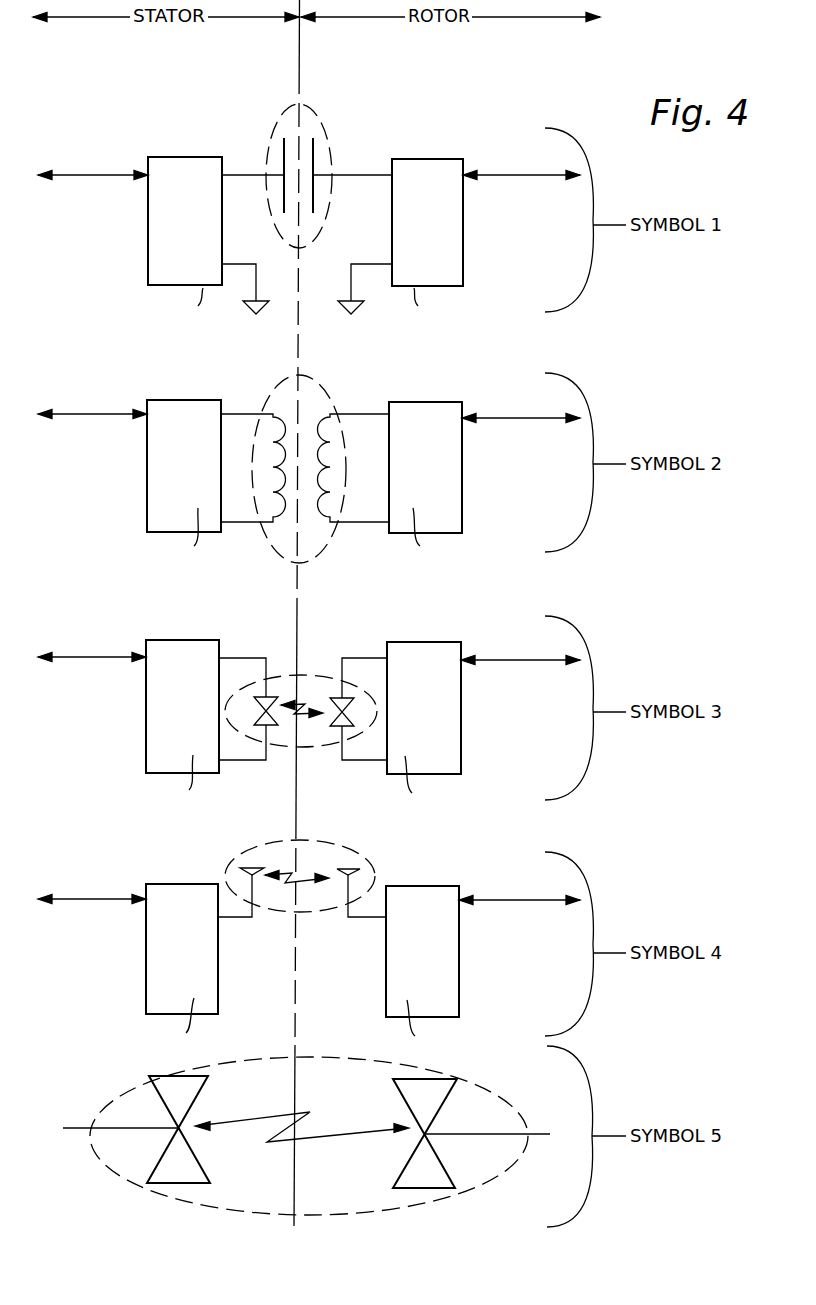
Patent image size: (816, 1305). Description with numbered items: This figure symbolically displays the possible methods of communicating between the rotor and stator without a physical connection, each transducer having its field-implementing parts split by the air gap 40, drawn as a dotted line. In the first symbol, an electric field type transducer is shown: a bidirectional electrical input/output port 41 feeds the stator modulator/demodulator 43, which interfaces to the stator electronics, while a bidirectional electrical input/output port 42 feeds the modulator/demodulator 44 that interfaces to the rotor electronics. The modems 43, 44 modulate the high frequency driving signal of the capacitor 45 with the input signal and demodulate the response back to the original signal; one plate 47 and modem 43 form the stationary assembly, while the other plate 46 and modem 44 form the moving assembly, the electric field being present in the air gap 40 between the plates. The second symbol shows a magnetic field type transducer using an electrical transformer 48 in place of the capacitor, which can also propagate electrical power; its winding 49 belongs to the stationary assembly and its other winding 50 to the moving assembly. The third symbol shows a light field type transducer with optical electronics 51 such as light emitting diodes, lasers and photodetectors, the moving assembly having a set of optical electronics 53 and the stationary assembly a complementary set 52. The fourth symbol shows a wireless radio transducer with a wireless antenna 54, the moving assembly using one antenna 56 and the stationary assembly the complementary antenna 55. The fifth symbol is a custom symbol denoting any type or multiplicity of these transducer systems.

The air gap 40 is at (300, 58).
The bidirectional electrical input/output port 41 is at (95, 176).
The bidirectional electrical input/output port 42 is at (500, 176).
The stator modulator/demodulator 43 is at (190, 157).
The rotor modulator/demodulator 44 is at (437, 159).
The capacitor 45 is at (317, 122).
The capacitor plate 46 is at (313, 200).
The capacitor plate 47 is at (284, 200).
The electrical transformer 48 is at (321, 392).
The transformer winding 49 is at (268, 446).
The transformer winding 50 is at (335, 456).
The optical electronics 51 is at (311, 674).
The optical electronics 52 is at (271, 696).
The optical electronics 53 is at (333, 730).
The wireless antenna 54 is at (350, 848).
The antenna 55 is at (258, 866).
The antenna 56 is at (340, 892).